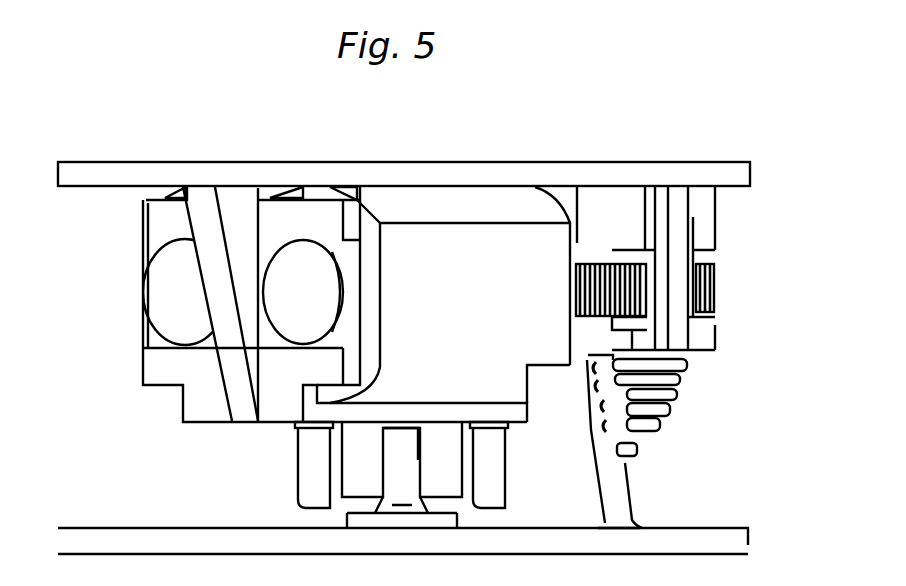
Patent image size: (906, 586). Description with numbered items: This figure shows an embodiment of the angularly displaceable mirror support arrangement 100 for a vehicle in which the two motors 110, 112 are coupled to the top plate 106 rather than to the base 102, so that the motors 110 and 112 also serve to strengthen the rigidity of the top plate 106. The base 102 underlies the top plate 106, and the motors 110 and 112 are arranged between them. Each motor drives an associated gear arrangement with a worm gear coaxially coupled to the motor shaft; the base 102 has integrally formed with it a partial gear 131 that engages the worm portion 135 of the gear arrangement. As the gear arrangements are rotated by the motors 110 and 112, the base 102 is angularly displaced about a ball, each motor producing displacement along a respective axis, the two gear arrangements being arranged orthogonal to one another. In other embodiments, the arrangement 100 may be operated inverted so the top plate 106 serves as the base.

The angularly displaceable mirror support arrangement 100 is at (70, 465).
The base 102 is at (274, 540).
The top plate 106 is at (182, 175).
The motor 110 is at (173, 287).
The motor 112 is at (500, 336).
The partial gear 131 is at (618, 507).
The worm portion 135 is at (687, 373).